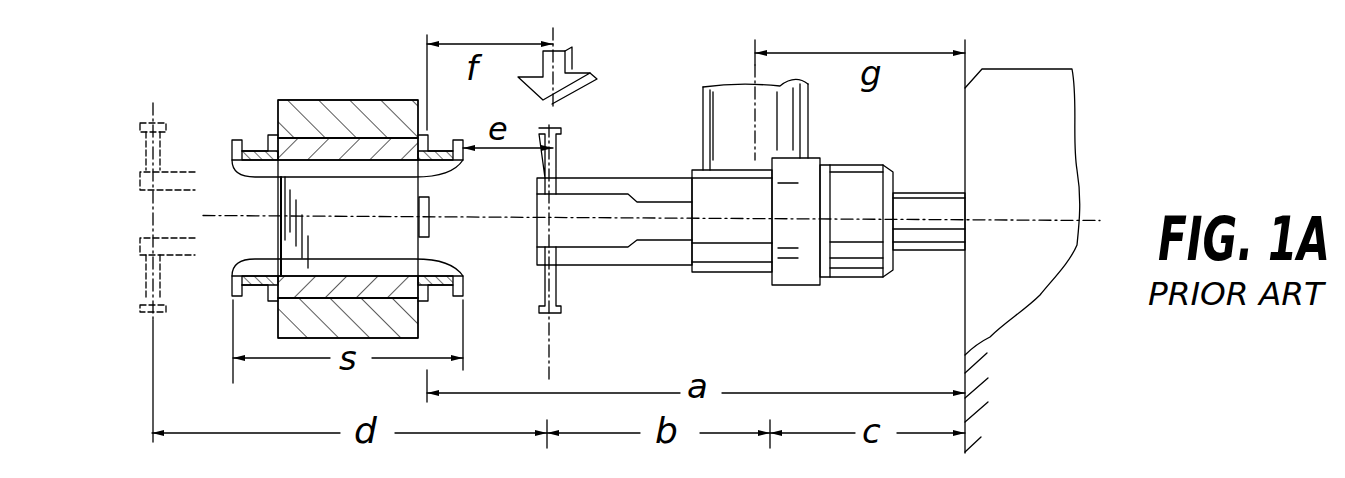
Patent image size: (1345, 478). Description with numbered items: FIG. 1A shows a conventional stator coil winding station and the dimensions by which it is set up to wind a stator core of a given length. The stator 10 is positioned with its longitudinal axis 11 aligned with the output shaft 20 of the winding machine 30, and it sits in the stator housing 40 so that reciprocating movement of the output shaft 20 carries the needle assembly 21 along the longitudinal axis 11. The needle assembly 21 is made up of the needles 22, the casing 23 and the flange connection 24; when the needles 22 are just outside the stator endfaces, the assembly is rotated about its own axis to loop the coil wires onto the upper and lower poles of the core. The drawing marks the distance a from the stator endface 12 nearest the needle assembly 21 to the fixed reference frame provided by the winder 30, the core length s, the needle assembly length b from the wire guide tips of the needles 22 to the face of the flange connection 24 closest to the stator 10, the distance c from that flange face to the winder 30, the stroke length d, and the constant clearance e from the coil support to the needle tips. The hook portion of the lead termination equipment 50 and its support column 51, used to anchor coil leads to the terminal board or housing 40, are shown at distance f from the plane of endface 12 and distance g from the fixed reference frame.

The stator 10 is at (463, 282).
The longitudinal axis 11 is at (219, 216).
The stator endface 12 is at (425, 46).
The output shaft 20 is at (935, 196).
The needle assembly 21 is at (824, 150).
The needles 22 is at (638, 268).
The casing 23 is at (720, 275).
The flange connection 24 is at (860, 277).
The winding machine 30 is at (1052, 68).
The stator housing 40 is at (310, 100).
The lead termination equipment 50 is at (570, 50).
The lead termination equipment support column 51 is at (710, 107).